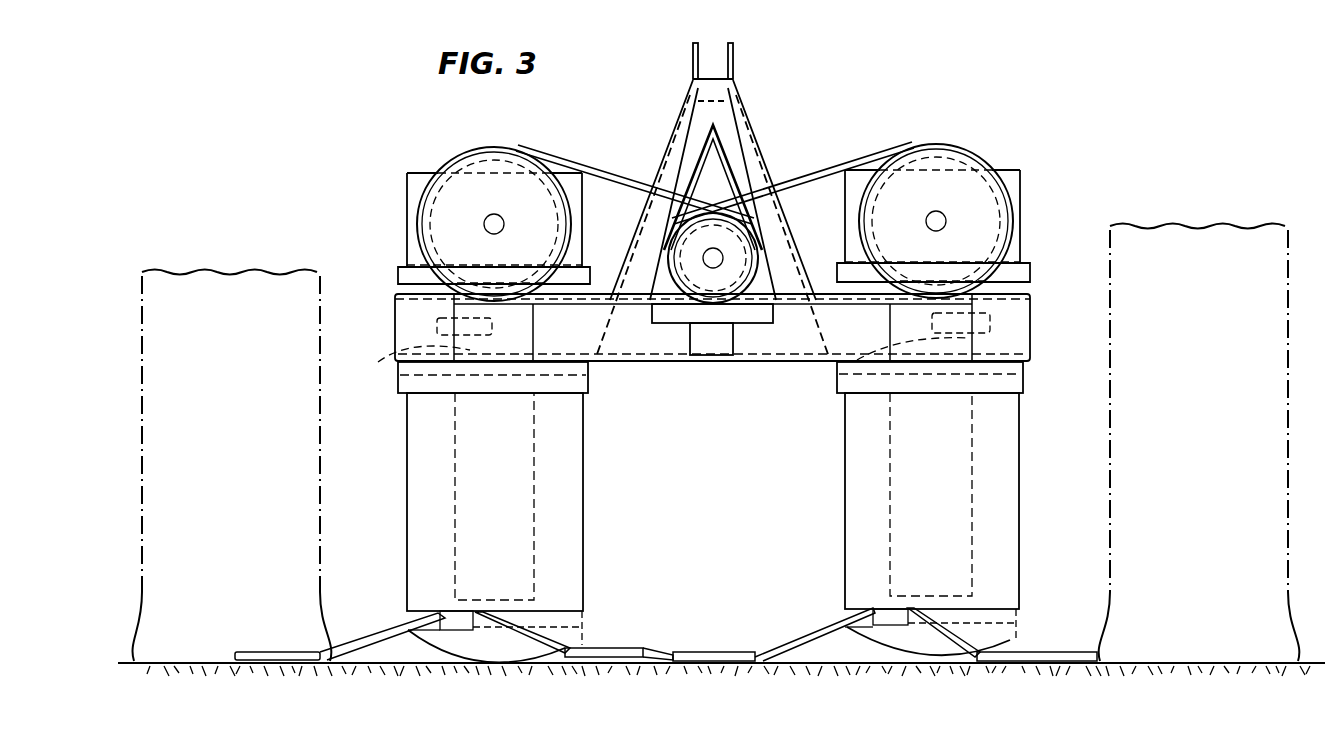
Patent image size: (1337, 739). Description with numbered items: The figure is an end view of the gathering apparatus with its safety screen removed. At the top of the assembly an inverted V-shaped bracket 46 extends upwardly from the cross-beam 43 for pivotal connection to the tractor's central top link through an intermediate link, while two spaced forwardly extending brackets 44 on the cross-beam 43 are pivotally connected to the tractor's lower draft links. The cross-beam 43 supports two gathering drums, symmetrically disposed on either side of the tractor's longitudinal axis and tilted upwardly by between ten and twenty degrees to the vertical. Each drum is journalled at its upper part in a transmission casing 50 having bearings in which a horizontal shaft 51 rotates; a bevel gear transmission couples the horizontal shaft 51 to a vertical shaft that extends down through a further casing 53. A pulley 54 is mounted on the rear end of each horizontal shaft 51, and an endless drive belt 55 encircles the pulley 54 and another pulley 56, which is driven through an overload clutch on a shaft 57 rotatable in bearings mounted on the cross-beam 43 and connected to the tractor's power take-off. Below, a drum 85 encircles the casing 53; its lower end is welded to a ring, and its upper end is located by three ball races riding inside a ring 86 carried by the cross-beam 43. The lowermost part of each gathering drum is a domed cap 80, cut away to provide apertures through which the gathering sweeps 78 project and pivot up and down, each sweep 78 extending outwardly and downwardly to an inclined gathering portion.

The cross-beam 43 is at (660, 340).
The forwardly extending brackets 44 is at (838, 368).
The inverted V-shaped bracket 46 is at (733, 148).
The transmission casing 50 is at (413, 197).
The horizontal shaft 51 is at (501, 231).
The casing 53 is at (462, 310).
The pulley 54 is at (495, 165).
The endless drive belt 55 is at (600, 183).
The pulley 56 is at (736, 242).
The shaft 57 is at (722, 258).
The gathering sweep 78 is at (350, 648).
The domed cap 80 is at (445, 640).
The drum 85 is at (570, 466).
The ring 86 is at (420, 385).